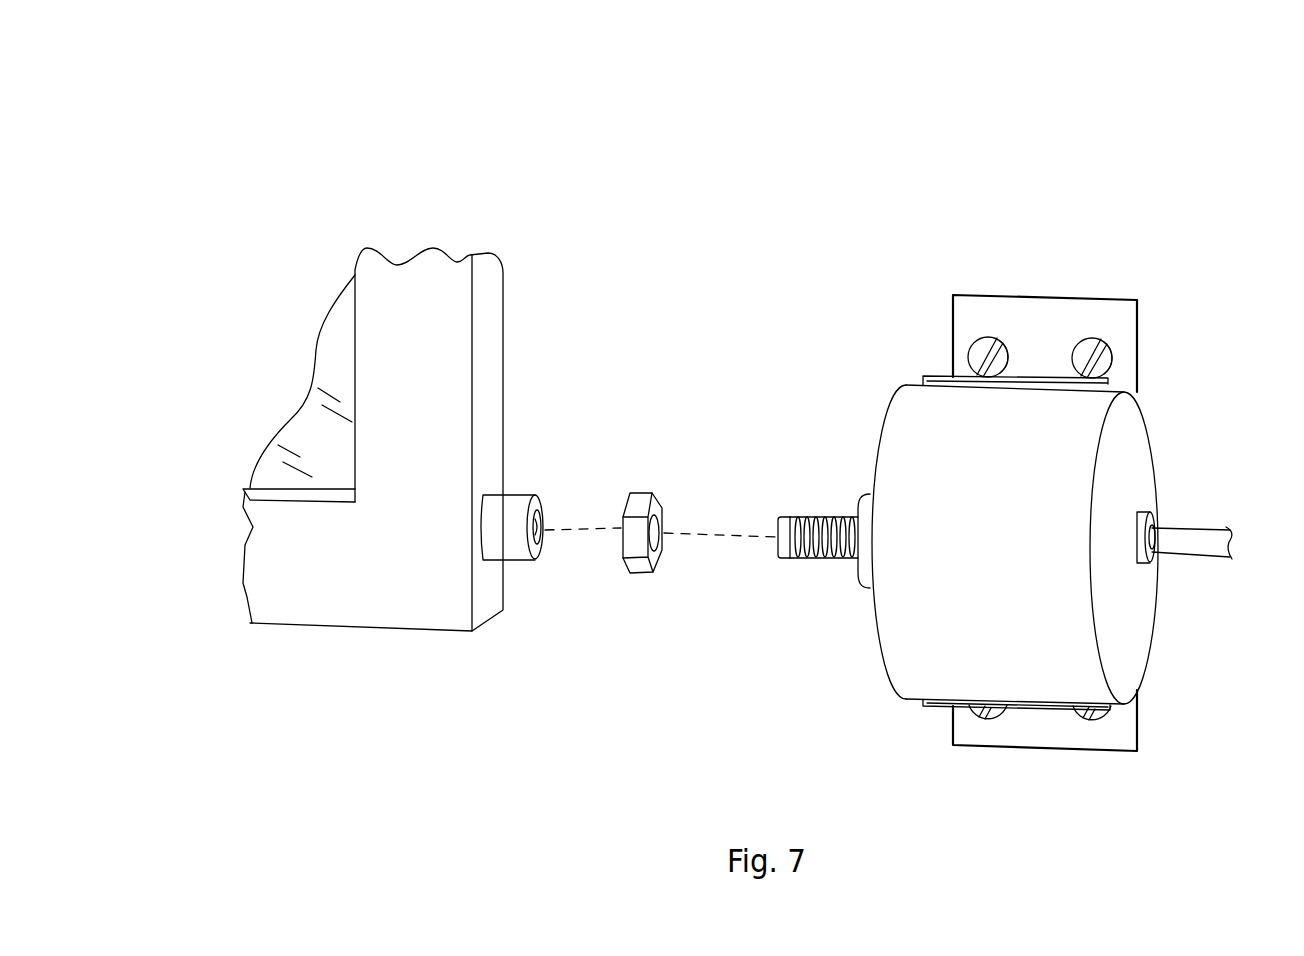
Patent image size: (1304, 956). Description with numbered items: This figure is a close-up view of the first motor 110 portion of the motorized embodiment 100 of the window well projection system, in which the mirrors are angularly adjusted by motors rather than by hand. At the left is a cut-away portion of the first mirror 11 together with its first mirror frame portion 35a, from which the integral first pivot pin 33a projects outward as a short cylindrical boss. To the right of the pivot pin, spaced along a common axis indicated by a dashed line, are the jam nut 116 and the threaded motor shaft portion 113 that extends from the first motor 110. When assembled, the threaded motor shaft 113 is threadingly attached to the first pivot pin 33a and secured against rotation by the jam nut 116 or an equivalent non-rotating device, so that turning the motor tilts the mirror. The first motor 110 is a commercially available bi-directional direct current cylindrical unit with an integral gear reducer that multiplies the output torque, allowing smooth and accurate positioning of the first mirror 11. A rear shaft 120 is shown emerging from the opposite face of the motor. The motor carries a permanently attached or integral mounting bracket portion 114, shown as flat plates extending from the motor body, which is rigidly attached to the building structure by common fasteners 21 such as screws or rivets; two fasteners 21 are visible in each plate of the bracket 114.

The motorized embodiment 100 is at (297, 162).
The first mirror 11 is at (327, 358).
The first mirror frame portion 35a is at (493, 294).
The first pivot pin 33a is at (513, 547).
The jam nut 116 is at (637, 565).
The threaded motor shaft portion 113 is at (817, 558).
The first motor 110 is at (933, 437).
The output shaft 120 is at (1195, 545).
The mounting bracket portion 114 is at (1140, 325).
The fasteners 21 is at (1082, 343).